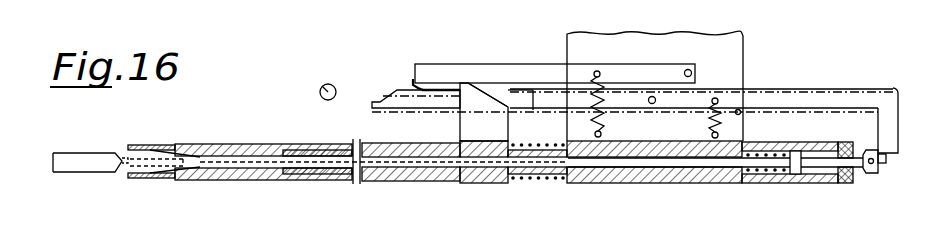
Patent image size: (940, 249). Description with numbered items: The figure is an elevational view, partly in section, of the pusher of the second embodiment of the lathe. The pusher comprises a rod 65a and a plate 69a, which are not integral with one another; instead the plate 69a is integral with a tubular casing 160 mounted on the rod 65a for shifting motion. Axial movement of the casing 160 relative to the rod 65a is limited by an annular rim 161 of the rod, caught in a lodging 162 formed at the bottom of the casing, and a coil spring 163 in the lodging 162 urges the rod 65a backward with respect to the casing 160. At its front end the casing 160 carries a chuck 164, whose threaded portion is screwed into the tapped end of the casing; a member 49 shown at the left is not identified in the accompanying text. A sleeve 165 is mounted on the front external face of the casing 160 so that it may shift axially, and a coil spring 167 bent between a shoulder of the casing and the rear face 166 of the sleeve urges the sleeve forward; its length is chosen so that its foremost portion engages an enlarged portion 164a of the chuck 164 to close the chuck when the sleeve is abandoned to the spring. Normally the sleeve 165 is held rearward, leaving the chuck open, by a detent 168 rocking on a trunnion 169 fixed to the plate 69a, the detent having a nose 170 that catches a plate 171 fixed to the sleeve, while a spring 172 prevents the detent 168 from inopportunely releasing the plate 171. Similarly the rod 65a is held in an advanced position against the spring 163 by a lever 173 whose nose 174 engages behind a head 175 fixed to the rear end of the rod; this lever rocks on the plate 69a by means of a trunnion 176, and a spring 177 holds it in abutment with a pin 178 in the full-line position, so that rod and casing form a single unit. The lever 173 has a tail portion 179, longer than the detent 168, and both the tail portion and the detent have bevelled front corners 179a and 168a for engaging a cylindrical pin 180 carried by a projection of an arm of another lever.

The push rod 49 is at (82, 156).
The enlarged portion 164a is at (167, 148).
The chuck 164 is at (227, 156).
The rod 65a is at (272, 160).
The sleeve 165 is at (373, 181).
The rear face 166 is at (508, 178).
The coil spring 167 is at (552, 180).
The tubular casing 160 is at (638, 173).
The coil spring 163 is at (763, 174).
The annular rim 161 is at (795, 175).
The lodging 162 is at (824, 173).
The head 175 is at (873, 175).
The nose 174 is at (894, 155).
The lever 173 is at (810, 98).
The bevelled front corner 179a is at (382, 97).
The cylindrical pin 180 is at (327, 84).
The detent 168 is at (552, 72).
The bevelled front corner 168a is at (411, 81).
The tail portion 179 is at (424, 89).
The nose 170 is at (461, 84).
The plate 171 is at (509, 122).
The plate 69a is at (736, 53).
The spring 172 is at (602, 86).
The trunnion 176 is at (652, 96).
The trunnion 169 is at (688, 69).
The spring 177 is at (722, 120).
The pin 178 is at (741, 109).